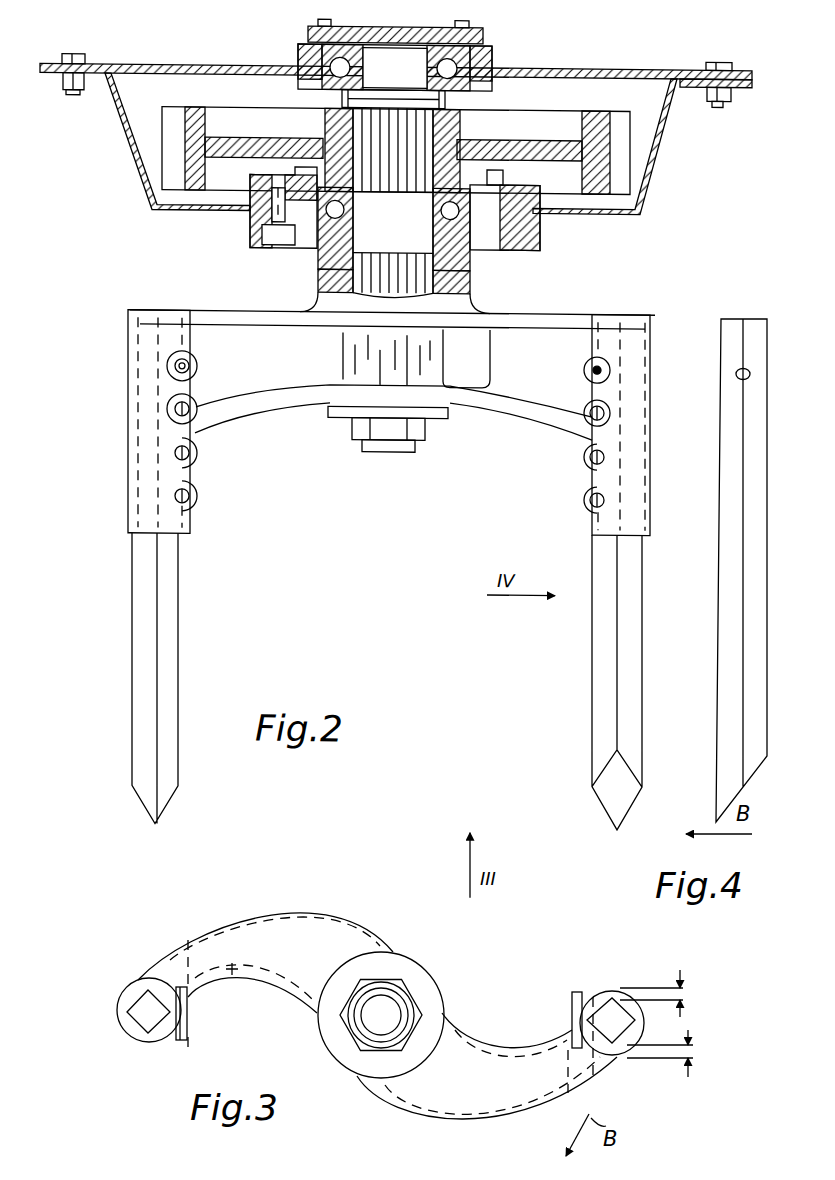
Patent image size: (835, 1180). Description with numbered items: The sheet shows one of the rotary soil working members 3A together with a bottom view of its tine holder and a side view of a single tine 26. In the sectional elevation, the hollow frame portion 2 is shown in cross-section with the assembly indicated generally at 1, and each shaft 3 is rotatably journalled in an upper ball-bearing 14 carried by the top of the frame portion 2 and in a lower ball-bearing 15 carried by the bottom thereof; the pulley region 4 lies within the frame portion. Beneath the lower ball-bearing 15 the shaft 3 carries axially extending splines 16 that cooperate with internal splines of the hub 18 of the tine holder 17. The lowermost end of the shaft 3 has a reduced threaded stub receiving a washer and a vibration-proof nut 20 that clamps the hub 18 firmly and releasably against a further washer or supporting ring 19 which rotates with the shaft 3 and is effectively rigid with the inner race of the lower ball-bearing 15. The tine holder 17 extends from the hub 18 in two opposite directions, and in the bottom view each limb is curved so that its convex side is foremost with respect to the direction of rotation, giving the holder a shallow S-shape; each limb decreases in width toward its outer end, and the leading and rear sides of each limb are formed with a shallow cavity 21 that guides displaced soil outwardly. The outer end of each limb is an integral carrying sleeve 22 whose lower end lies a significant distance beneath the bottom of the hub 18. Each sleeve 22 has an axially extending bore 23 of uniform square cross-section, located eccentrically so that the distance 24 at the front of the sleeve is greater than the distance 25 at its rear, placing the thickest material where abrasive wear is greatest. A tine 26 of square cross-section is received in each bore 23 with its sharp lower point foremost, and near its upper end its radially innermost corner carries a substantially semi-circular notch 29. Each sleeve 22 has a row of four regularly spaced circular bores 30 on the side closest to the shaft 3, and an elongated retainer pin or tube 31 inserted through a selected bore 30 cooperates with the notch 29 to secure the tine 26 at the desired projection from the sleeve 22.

In FIG. 2, the cutting unit 1 is at (602, 62).
In FIG. 2, the hollow frame portion 2 is at (160, 67).
In FIG. 2, the shaft 3 is at (378, 68).
In FIG. 3, the shaft 3 is at (375, 1018).
In FIG. 2, the rotary soil working member 3A is at (395, 631).
In FIG. 2, the drive pulley 4 is at (198, 95).
In FIG. 2, the upper ball-bearing 14 is at (338, 58).
In FIG. 2, the lower ball-bearing 15 is at (320, 216).
In FIG. 2, the splines 16 is at (391, 262).
In FIG. 2, the tine holder 17 is at (205, 307).
In FIG. 3, the tine holder 17 is at (274, 904).
In FIG. 2, the hub 18 is at (330, 281).
In FIG. 3, the hub 18 is at (385, 966).
In FIG. 2, the supporting ring 19 is at (454, 282).
In FIG. 2, the vibration-proof nut 20 is at (422, 432).
In FIG. 3, the vibration-proof nut 20 is at (398, 984).
In FIG. 2, the cavity 21 is at (265, 364).
In FIG. 3, the cavity 21 is at (385, 1015).
In FIG. 2, the carrying sleeve 22 is at (190, 530).
In FIG. 3, the carrying sleeve 22 is at (120, 1022).
In FIG. 3, the bore 23 is at (127, 1000).
In FIG. 3, the distance 24 is at (692, 1056).
In FIG. 3, the distance 25 is at (683, 990).
In FIG. 2, the tine 26 is at (135, 622).
In FIG. 4, the tine 26 is at (721, 596).
In FIG. 3, the tine 26 is at (133, 1005).
In FIG. 4, the notch 29 is at (736, 374).
In FIG. 3, the notch 29 is at (128, 1043).
In FIG. 2, the bores 30 is at (200, 415).
In FIG. 2, the pin 31 is at (198, 367).
In FIG. 3, the pin 31 is at (172, 1043).